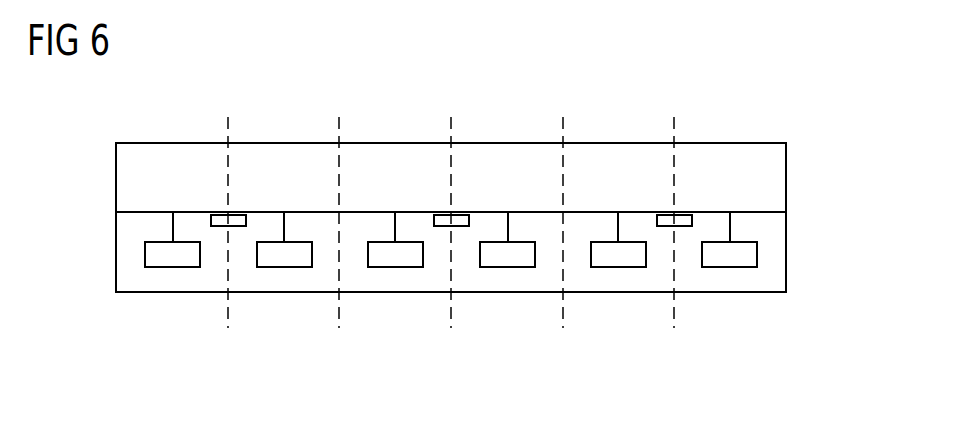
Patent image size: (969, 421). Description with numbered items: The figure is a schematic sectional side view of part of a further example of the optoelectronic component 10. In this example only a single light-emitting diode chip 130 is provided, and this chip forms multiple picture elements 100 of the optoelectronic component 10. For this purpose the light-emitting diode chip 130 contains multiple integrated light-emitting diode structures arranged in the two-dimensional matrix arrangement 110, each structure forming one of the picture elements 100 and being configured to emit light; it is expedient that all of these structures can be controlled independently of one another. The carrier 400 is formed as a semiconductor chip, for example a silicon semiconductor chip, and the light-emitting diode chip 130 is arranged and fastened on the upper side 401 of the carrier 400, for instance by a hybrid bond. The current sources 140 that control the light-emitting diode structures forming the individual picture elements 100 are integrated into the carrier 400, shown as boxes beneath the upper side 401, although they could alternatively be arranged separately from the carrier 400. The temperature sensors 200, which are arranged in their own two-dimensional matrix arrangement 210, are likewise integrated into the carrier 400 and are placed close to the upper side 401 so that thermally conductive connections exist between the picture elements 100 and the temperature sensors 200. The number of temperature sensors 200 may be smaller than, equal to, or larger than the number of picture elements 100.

The optoelectronic component 10 is at (781, 81).
The picture elements 100 is at (340, 169).
The two-dimensional matrix arrangement 110 is at (473, 132).
The light-emitting diode chip 130 is at (786, 180).
The current sources 140 is at (177, 257).
The temperature sensors 200 is at (469, 297).
The two-dimensional matrix arrangement 210 is at (237, 225).
The carrier 400 is at (786, 256).
The upper side 401 is at (760, 212).